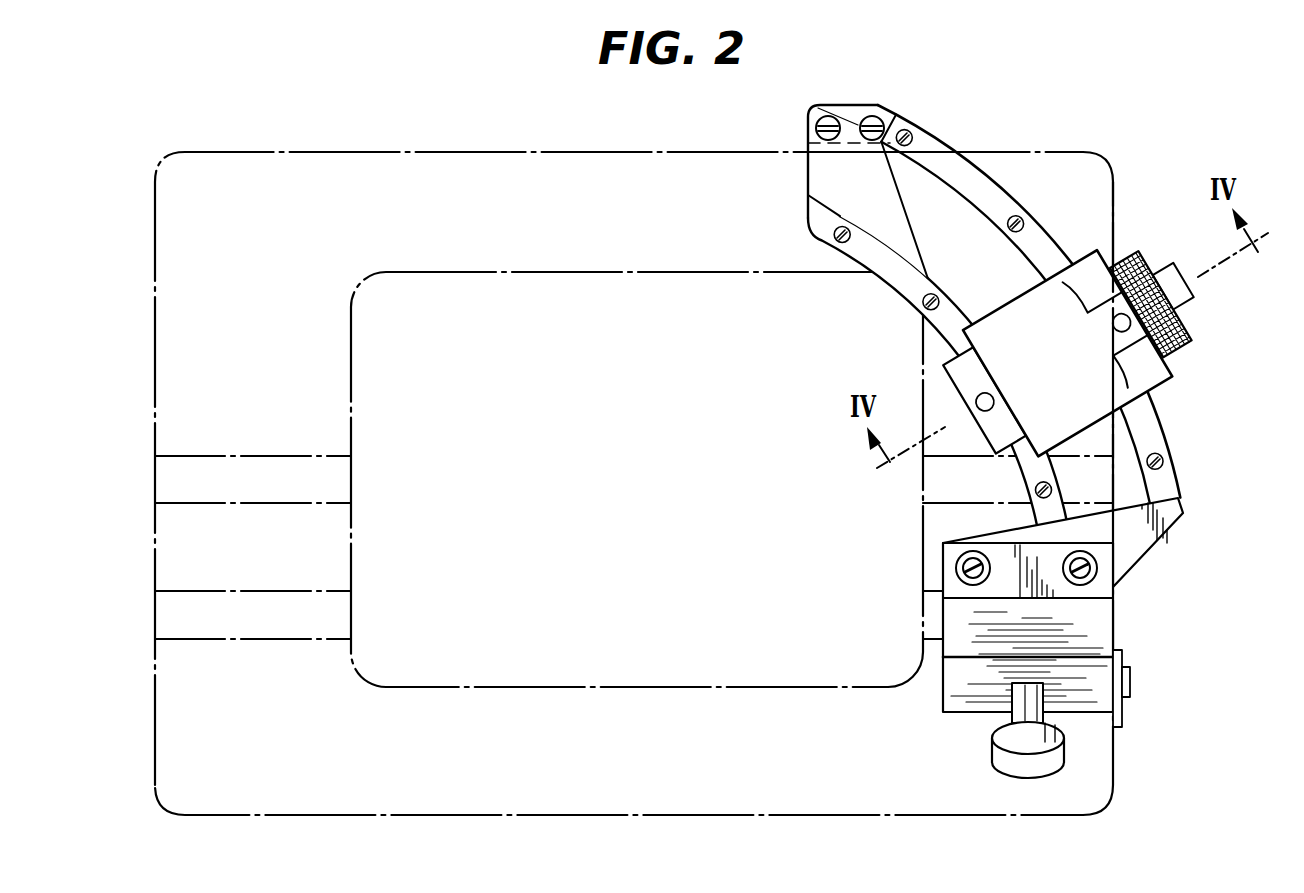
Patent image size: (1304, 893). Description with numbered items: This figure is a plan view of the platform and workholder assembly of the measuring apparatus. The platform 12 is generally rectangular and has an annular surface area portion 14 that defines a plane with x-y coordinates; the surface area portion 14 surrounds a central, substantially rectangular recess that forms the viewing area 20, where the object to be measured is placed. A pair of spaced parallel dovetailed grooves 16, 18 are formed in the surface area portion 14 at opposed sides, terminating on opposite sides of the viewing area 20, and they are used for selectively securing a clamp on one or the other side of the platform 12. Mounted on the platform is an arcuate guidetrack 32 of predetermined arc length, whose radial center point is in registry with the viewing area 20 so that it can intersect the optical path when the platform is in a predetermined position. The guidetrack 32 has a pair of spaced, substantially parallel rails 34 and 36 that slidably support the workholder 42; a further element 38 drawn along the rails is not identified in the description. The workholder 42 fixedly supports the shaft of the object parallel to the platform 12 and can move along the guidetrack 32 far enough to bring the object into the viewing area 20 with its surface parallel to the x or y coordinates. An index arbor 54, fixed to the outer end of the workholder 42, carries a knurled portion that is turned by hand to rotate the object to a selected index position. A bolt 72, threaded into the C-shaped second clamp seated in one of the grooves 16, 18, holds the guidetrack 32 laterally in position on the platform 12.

The platform 12 is at (358, 820).
The annular surface area portion 14 is at (378, 168).
The dovetailed groove 16 is at (230, 475).
The dovetailed groove 18 is at (243, 605).
The viewing area 20 is at (394, 630).
The arcuate guidetrack 32 is at (1005, 259).
The rail 34 is at (990, 161).
The rail 36 is at (870, 276).
The guide slot 38 is at (932, 275).
The workholder 42 is at (1095, 393).
The index arbor 54 is at (1206, 327).
The bolt 72 is at (1046, 776).